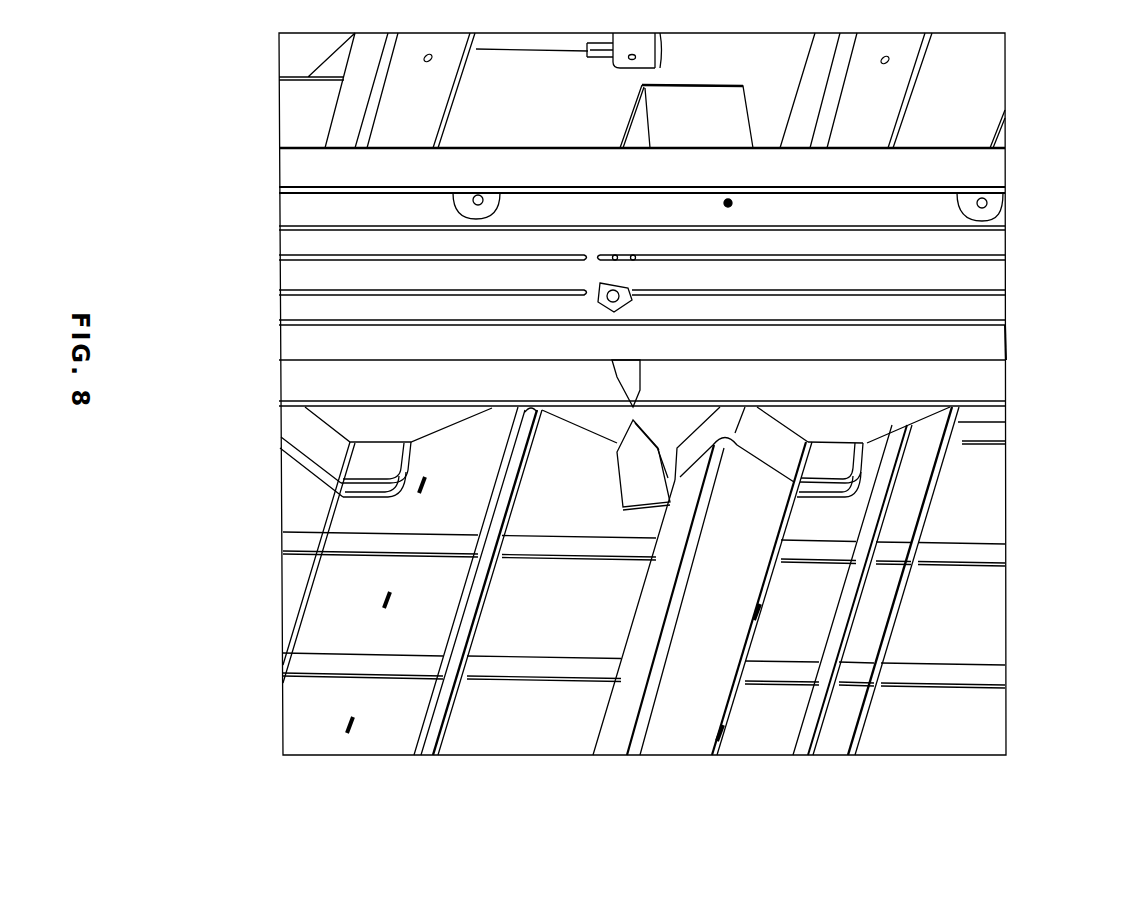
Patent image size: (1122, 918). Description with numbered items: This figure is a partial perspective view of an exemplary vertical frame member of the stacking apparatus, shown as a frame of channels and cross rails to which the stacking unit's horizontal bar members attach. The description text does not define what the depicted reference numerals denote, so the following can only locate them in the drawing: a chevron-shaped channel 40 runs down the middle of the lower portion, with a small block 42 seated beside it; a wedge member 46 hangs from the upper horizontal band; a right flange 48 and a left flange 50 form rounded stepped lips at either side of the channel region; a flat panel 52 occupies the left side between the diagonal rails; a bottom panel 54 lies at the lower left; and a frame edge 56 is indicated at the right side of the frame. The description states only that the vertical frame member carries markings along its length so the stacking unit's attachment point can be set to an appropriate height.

The channel 40 is at (712, 687).
The block 42 is at (623, 507).
The wedge member 46 is at (612, 362).
The right flange 48 is at (860, 476).
The left flange 50 is at (321, 457).
The panel 52 is at (290, 560).
The bottom panel 54 is at (379, 737).
The frame edge 56 is at (1009, 342).